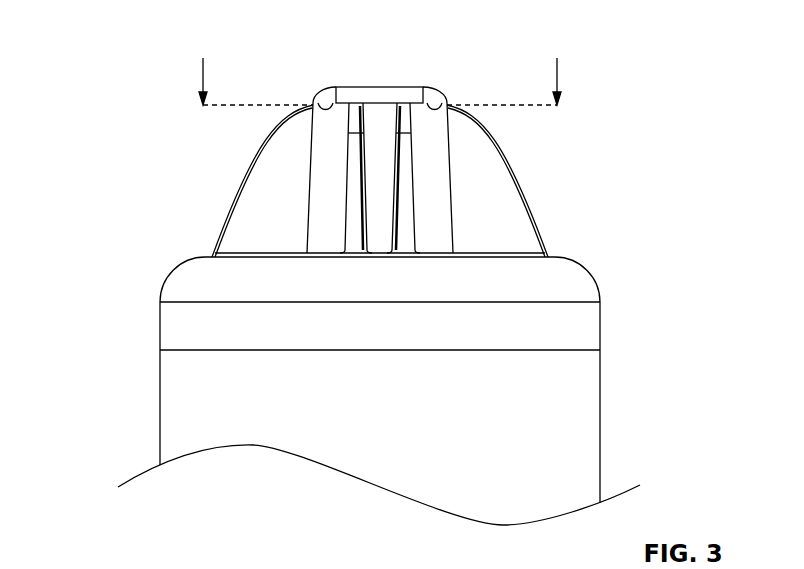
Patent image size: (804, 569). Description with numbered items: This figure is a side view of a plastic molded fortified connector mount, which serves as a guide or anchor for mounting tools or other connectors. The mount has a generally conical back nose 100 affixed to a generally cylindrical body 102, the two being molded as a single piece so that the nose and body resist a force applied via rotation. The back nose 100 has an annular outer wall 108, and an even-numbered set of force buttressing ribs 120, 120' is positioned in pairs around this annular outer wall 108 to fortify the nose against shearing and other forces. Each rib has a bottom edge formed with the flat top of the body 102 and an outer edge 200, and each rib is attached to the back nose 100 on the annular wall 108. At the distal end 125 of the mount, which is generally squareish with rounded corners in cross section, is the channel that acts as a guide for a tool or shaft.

The back nose 100 is at (130, 39).
The body 102 is at (262, 394).
The annular outer wall 108 is at (303, 220).
The force buttressing rib 120 is at (423, 222).
The force buttressing rib 120' is at (335, 222).
The distal end 125 is at (387, 87).
The outer edge 200 is at (475, 204).